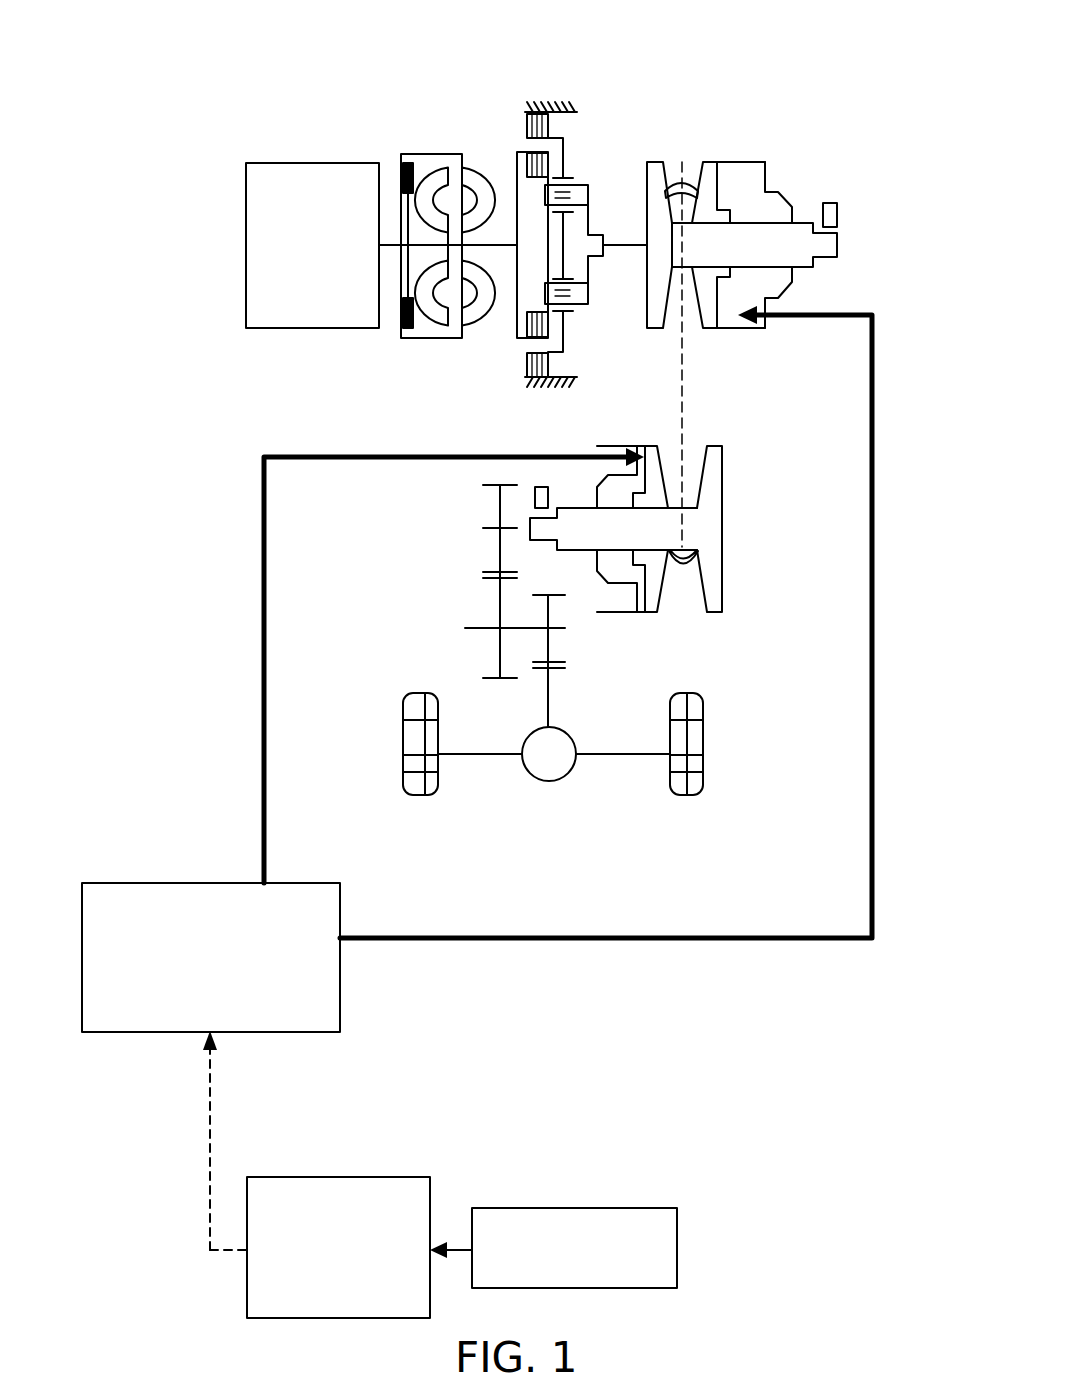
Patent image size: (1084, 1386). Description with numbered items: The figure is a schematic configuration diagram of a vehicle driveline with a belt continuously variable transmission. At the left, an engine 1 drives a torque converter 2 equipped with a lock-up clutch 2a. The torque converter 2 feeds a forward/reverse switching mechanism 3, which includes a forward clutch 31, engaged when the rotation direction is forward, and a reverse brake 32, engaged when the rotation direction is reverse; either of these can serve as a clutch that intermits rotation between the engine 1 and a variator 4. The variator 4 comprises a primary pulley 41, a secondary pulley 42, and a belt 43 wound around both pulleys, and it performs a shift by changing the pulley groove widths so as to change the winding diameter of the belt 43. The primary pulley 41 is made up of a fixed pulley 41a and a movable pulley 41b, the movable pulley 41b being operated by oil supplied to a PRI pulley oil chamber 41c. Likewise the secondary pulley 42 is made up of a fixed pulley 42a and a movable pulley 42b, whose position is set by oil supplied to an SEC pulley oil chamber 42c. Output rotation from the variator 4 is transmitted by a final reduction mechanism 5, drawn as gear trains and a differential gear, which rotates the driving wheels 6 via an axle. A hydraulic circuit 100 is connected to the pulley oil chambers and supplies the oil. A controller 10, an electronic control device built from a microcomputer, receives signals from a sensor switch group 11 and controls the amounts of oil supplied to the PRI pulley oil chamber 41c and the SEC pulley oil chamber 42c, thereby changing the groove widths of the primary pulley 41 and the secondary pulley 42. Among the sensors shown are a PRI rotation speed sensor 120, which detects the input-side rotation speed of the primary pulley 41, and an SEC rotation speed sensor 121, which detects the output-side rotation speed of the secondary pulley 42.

The engine 1 is at (300, 162).
The torque converter 2 is at (430, 196).
The lock-up clutch 2a is at (407, 162).
The forward/reverse switching mechanism 3 is at (539, 194).
The forward clutch 31 is at (527, 152).
The reverse brake 32 is at (557, 110).
The variator 4 is at (727, 339).
The primary pulley 41 is at (728, 198).
The fixed pulley 41a is at (655, 161).
The movable pulley 41b is at (708, 161).
The PRI pulley oil chamber 41c is at (738, 182).
The secondary pulley 42 is at (671, 545).
The fixed pulley 42a is at (725, 462).
The movable pulley 42b is at (653, 613).
The SEC pulley oil chamber 42c is at (630, 583).
The belt 43 is at (688, 573).
The final reduction mechanism 5 is at (447, 595).
The driving wheels 6 is at (403, 757).
The controller 10 is at (352, 1177).
The sensor switch group 11 is at (677, 1246).
The hydraulic circuit 100 is at (208, 883).
The PRI rotation speed sensor 120 is at (838, 215).
The SEC rotation speed sensor 121 is at (552, 487).